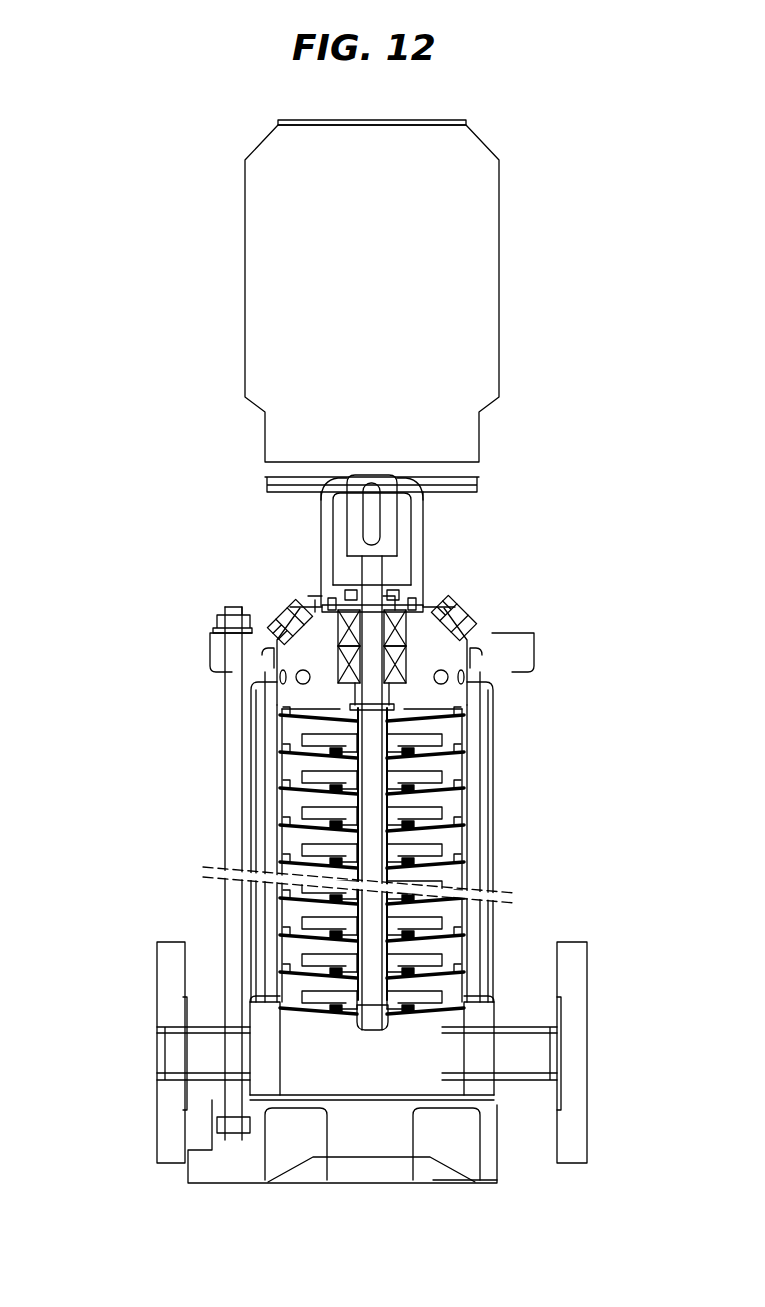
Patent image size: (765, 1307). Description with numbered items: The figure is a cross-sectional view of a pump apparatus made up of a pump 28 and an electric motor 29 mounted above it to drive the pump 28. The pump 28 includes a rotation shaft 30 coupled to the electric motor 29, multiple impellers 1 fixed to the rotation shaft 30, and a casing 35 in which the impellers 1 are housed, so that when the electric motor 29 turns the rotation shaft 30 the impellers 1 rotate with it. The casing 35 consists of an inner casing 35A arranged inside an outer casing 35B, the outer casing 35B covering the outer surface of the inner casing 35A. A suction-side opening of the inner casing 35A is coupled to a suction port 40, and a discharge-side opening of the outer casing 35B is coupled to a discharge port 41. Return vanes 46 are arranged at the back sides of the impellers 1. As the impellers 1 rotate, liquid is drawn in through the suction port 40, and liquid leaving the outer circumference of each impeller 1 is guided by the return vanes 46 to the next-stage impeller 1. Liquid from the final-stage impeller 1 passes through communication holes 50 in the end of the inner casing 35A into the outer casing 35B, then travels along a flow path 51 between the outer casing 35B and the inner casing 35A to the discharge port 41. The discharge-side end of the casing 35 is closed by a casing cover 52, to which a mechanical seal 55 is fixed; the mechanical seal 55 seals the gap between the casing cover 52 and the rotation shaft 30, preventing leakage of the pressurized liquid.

The impeller 1 is at (440, 735).
The pump 28 is at (371, 829).
The electric motor 29 is at (245, 285).
The rotation shaft 30 is at (372, 833).
The casing 35 is at (244, 826).
The inner casing 35A is at (465, 873).
The outer casing 35B is at (252, 858).
The suction port 40 is at (587, 1053).
The discharge port 41 is at (157, 1053).
The return vanes 46 is at (292, 720).
The communication holes 50 is at (302, 671).
The flow path 51 is at (262, 940).
The casing cover 52 is at (312, 608).
The mechanical seal 55 is at (390, 612).